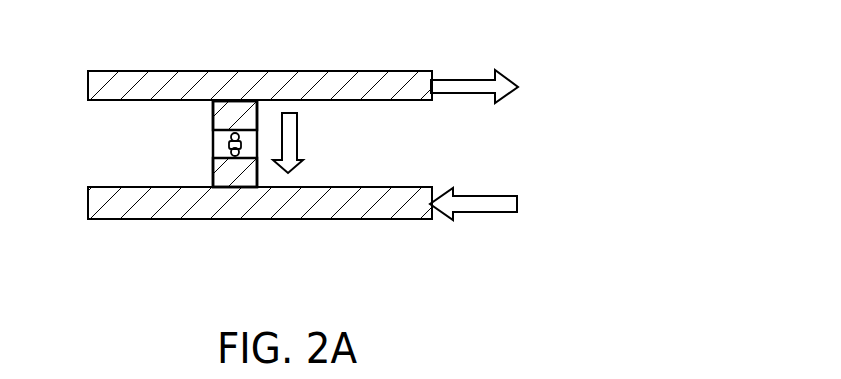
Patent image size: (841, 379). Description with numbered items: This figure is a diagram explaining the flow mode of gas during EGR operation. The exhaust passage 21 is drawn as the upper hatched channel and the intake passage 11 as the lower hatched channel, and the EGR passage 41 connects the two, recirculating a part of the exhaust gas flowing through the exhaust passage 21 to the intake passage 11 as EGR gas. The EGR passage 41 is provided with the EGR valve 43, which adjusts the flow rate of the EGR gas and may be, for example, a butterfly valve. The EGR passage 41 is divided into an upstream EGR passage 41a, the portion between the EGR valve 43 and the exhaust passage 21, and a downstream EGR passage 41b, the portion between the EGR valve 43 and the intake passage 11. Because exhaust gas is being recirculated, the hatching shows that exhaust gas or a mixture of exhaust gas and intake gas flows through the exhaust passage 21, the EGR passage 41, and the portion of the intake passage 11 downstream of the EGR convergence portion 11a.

The intake passage 11 is at (150, 219).
The EGR convergence portion 11a is at (258, 219).
The exhaust passage 21 is at (349, 71).
The EGR passage 41 is at (97, 112).
The upstream EGR passage 41a is at (213, 116).
The downstream EGR passage 41b is at (213, 167).
The EGR valve 43 is at (235, 133).